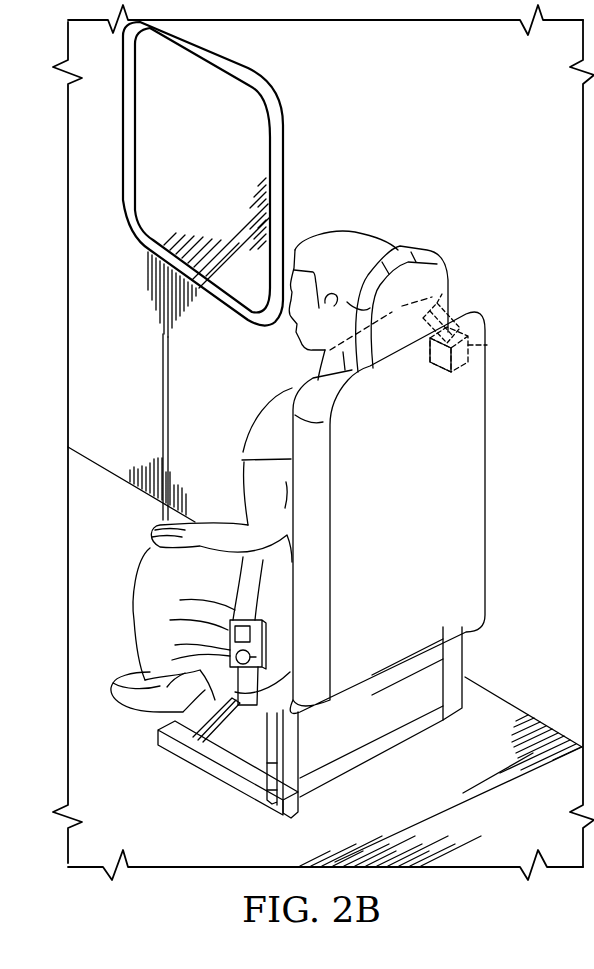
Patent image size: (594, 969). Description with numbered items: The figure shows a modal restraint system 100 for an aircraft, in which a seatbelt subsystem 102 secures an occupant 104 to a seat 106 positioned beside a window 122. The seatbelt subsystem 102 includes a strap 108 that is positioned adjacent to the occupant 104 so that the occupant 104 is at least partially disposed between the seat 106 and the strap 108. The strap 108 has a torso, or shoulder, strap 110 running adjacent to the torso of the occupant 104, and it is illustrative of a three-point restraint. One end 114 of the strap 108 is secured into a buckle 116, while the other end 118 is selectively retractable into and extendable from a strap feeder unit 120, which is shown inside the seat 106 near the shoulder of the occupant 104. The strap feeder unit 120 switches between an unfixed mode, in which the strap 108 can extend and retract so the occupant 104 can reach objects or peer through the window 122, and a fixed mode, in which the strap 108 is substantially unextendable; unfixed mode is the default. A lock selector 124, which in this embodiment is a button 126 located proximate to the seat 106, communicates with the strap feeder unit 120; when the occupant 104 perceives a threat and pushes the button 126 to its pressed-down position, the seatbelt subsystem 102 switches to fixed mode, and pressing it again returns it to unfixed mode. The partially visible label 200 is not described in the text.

The modal restraint system 100 is at (0, 121).
The seat system 200 is at (68, 218).
The seatbelt subsystem 102 is at (321, 613).
The occupant 104 is at (368, 235).
The seat 106 is at (473, 425).
The strap 108 is at (252, 575).
The torso strap 110 is at (418, 285).
The end of strap 118 is at (443, 292).
The end of strap 114 is at (240, 620).
The buckle 116 is at (222, 656).
The strap feeder unit 120 is at (487, 350).
The window 122 is at (124, 199).
The lock selector 124 is at (346, 630).
The button 126 is at (250, 657).